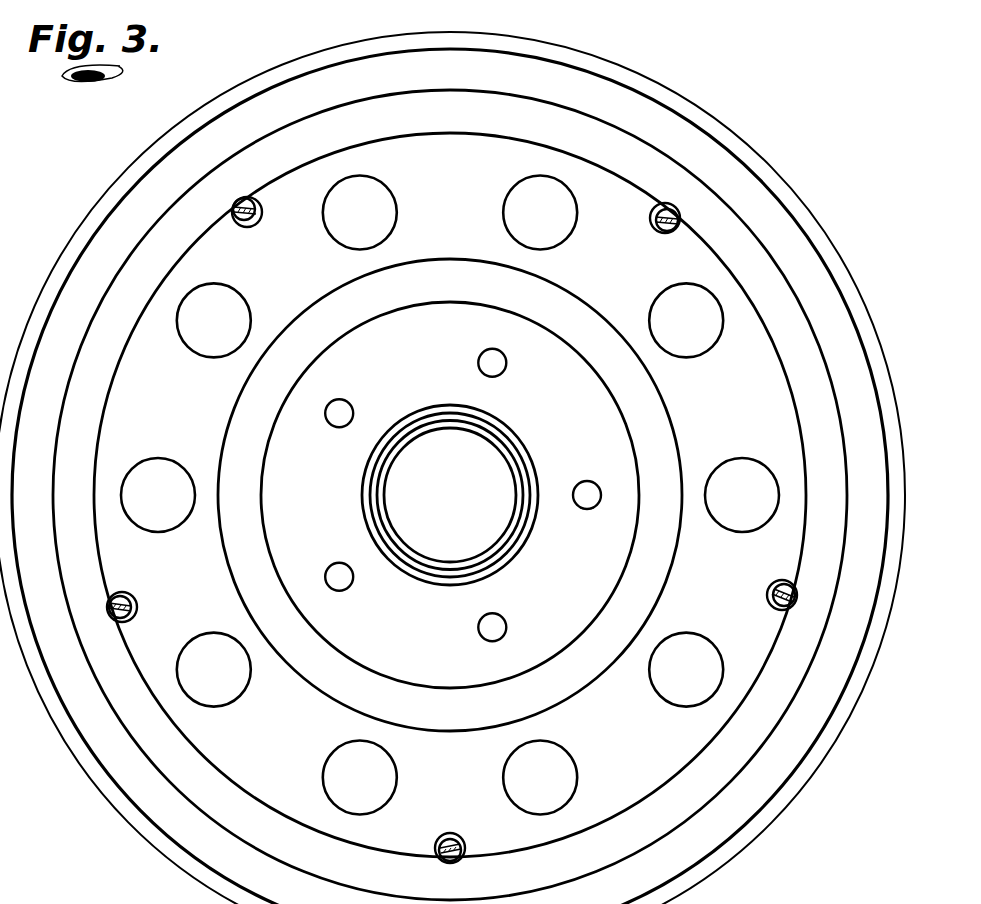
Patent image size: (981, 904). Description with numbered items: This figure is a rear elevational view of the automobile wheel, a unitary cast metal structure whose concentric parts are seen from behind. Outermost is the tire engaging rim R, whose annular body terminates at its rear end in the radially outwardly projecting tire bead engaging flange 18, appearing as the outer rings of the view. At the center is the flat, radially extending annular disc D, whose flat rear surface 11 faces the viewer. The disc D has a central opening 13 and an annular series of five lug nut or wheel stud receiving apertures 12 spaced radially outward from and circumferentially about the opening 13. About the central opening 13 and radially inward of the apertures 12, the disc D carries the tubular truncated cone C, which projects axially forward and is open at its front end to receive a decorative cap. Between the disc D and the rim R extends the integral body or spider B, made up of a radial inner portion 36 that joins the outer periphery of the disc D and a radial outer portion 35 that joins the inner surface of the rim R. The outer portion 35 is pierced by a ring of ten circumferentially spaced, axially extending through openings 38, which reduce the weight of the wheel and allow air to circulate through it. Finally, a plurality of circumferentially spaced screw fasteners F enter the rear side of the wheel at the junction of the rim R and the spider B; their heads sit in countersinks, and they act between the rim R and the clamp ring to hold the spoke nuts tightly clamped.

The rim R is at (706, 106).
The rear tire bead engaging flange 18 is at (762, 157).
The screw fasteners F is at (690, 209).
The body or spider B is at (450, 495).
The radial outer portion of the spider 35 is at (483, 495).
The through openings 38 is at (500, 210).
The central disc D is at (450, 495).
The radial inner portion of the spider 36 is at (632, 392).
The lug nut or wheel stud receiving apertures 12 is at (330, 427).
The rear surface of the disc 11 is at (446, 520).
The central opening 13 is at (526, 526).
The truncated cone C is at (392, 494).